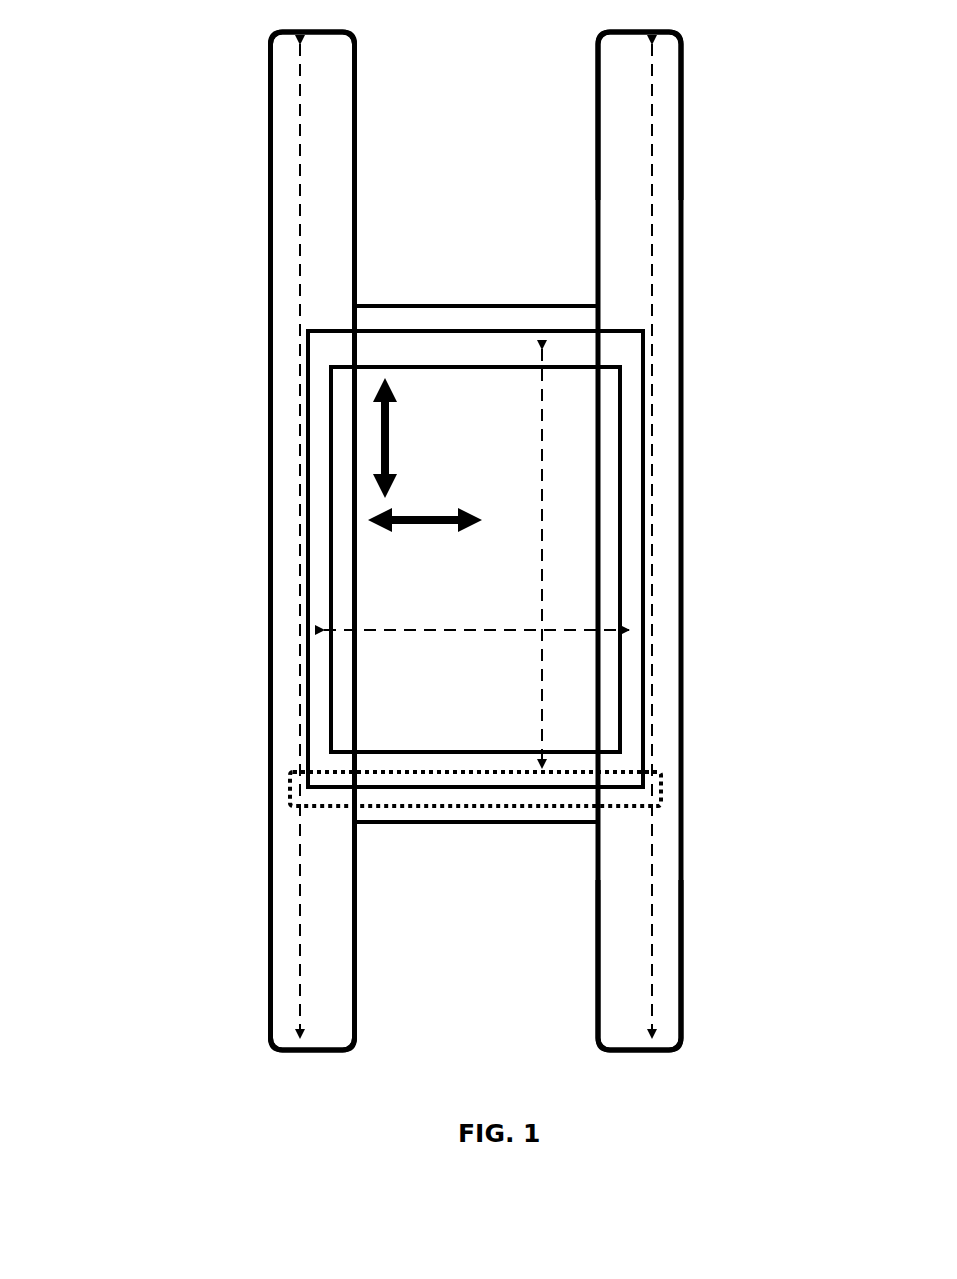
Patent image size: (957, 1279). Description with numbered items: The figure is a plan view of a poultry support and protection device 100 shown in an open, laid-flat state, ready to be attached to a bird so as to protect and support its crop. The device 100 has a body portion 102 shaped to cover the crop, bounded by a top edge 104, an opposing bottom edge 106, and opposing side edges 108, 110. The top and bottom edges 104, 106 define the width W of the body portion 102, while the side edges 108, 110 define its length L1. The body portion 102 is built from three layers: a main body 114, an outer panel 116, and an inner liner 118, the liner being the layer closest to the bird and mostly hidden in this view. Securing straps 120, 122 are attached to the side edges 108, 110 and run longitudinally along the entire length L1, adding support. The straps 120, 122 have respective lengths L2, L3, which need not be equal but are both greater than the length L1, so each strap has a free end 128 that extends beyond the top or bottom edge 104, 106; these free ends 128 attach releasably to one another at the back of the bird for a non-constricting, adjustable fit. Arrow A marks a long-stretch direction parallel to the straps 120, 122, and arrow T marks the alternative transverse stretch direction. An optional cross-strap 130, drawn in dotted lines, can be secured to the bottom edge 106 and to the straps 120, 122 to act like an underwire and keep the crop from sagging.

The poultry support and protection device 100 is at (168, 232).
The body portion 102 is at (628, 352).
The top edge 104 is at (392, 331).
The bottom edge 106 is at (445, 787).
The side edge 108 is at (308, 557).
The side edge 110 is at (641, 518).
The main body 114 is at (513, 763).
The outer panel 116 is at (475, 559).
The inner liner 118 is at (477, 318).
The securing strap 120 is at (270, 428).
The securing strap 122 is at (683, 626).
The free end 128 is at (278, 180).
The cross-strap 130 is at (665, 786).
The length of the body portion L1 is at (542, 490).
The length of the strap L2 is at (300, 870).
The length of the strap L3 is at (652, 257).
The width of the body portion W is at (412, 630).
The arrow A is at (385, 418).
The arrow T is at (452, 524).